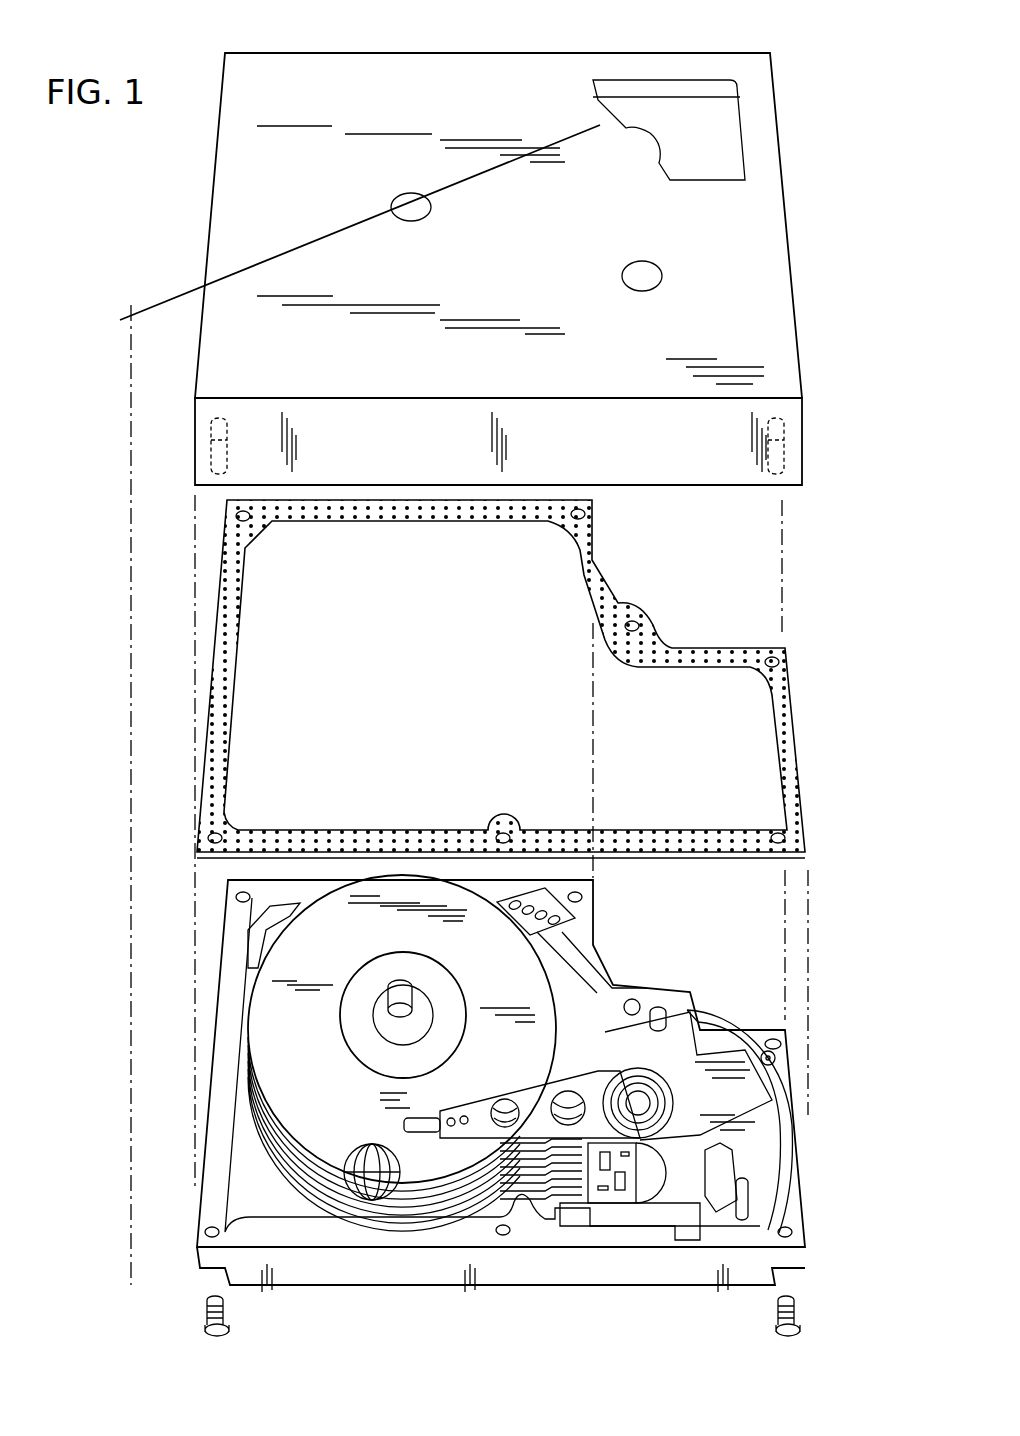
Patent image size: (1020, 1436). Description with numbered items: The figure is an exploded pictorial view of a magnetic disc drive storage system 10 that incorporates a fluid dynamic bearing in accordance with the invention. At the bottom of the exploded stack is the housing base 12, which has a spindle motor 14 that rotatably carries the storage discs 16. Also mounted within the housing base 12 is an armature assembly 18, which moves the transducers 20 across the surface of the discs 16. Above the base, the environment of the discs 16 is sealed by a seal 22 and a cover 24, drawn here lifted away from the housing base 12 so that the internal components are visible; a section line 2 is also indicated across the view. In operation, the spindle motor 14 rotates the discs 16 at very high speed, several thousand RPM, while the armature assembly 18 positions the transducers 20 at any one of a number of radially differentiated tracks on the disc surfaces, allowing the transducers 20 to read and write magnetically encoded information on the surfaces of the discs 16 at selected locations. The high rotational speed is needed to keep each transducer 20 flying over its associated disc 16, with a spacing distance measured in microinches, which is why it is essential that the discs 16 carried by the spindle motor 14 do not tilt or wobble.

The storage system 10 is at (775, 50).
The section line 2- 2 is at (583, 139).
The housing base 12 is at (808, 1238).
The spindle motor 14 is at (378, 1028).
The storage discs 16 is at (382, 1142).
The armature assembly 18 is at (545, 1215).
The transducers 20 is at (410, 1124).
The seal 22 is at (803, 814).
The cover 24 is at (793, 251).